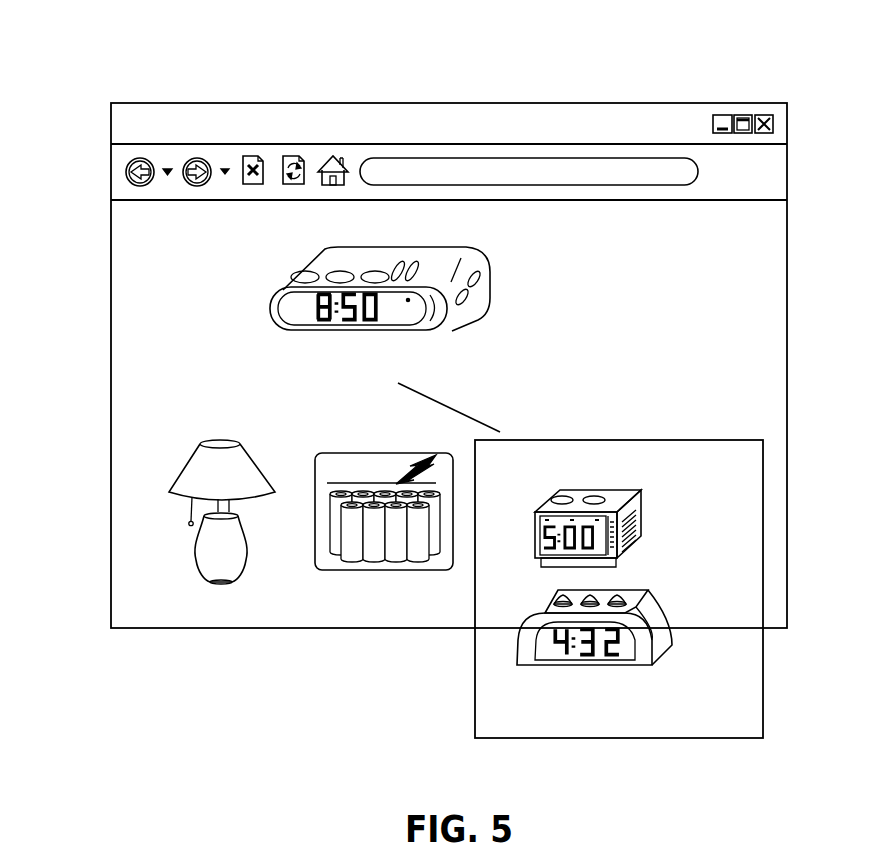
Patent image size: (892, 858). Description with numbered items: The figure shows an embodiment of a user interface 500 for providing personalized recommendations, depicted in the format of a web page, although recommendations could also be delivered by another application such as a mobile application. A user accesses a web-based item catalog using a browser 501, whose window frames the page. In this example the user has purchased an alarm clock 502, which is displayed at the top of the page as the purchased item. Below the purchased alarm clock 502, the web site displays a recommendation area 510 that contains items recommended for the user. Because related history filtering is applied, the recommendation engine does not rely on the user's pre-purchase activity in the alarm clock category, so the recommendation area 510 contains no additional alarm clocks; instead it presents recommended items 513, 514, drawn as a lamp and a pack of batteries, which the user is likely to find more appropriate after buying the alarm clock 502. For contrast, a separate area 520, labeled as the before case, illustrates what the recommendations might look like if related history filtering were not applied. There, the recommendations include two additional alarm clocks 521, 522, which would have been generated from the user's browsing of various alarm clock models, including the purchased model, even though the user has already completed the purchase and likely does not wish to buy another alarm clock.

The user interface 500 is at (192, 50).
The browser 501 is at (100, 183).
The alarm clock 502 is at (476, 306).
The recommendation area 510 is at (148, 364).
The recommended item 513 is at (203, 587).
The recommended item 514 is at (336, 576).
The area 520 is at (711, 435).
The alarm clock 521 is at (658, 663).
The alarm clock 522 is at (650, 531).